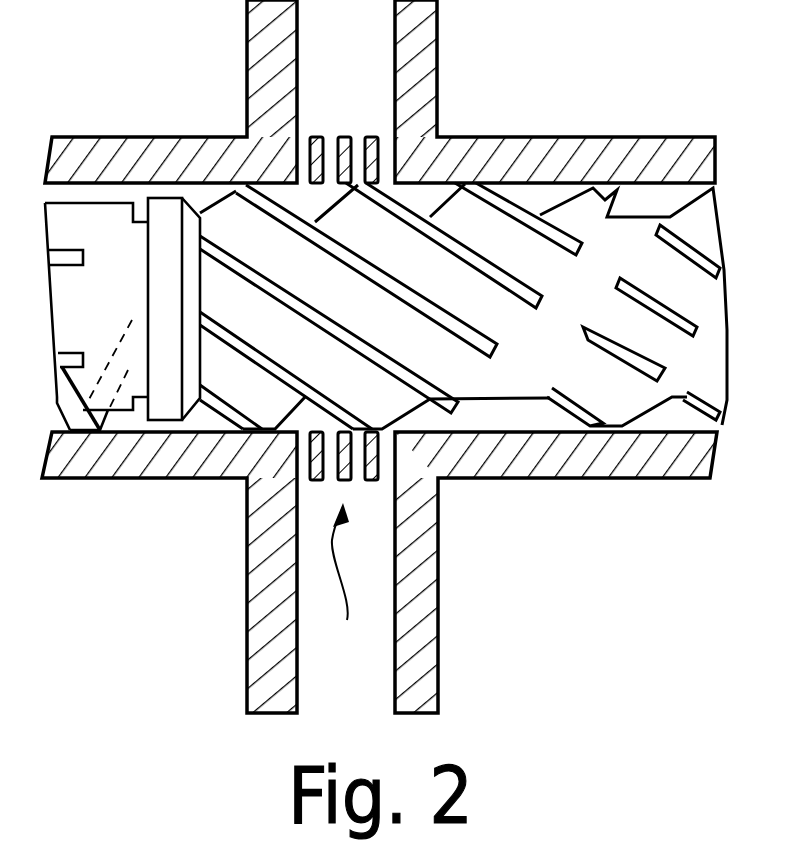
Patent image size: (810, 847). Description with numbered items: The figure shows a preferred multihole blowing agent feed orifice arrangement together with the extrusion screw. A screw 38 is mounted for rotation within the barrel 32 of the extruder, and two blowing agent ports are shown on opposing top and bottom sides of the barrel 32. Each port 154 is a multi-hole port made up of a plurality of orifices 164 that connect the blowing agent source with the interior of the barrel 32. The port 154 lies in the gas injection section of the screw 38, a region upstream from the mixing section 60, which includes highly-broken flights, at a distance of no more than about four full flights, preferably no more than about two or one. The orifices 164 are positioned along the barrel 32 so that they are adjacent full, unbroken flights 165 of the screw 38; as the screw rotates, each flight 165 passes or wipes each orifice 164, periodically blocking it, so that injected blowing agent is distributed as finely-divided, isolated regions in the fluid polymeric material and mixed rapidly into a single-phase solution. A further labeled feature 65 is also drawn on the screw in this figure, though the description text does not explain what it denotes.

The barrel 32 is at (101, 462).
The screw 38 is at (455, 309).
The mixing section 60 is at (697, 414).
The flute 65 is at (463, 242).
The port 154 is at (341, 582).
The orifices 164 is at (383, 142).
The full, unbroken flights 165 is at (396, 352).